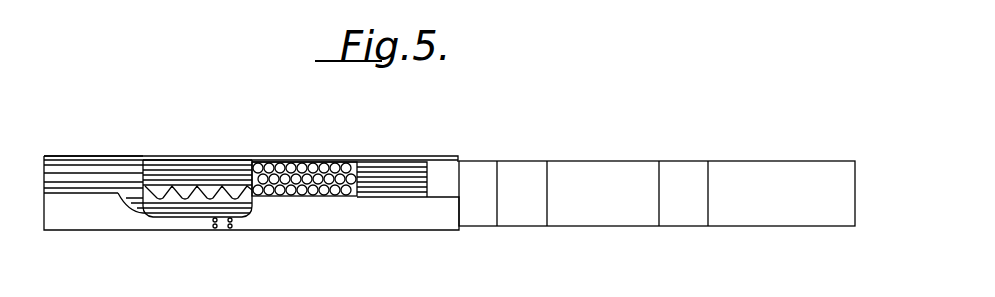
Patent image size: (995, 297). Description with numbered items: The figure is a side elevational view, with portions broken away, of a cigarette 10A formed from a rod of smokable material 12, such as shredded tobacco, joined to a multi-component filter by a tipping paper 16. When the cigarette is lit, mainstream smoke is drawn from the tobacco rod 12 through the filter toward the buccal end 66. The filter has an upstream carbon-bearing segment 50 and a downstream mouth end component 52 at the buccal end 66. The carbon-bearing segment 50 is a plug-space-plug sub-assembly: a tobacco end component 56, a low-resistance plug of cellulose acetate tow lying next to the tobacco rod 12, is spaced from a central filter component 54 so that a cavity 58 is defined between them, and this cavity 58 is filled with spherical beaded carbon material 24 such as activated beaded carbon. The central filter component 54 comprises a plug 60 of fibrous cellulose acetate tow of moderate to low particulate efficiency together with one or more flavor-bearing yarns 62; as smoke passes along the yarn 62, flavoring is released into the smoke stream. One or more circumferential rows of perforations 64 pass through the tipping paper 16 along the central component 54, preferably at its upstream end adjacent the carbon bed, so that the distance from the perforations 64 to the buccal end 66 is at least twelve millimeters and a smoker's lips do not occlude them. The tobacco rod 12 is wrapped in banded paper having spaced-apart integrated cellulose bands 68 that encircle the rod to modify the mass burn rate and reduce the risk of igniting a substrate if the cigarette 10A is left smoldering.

The cigarette 10A is at (648, 158).
The rod of smokable material 12 is at (768, 177).
The tipping paper 16 is at (338, 220).
The spherical beaded carbon material 24 is at (290, 163).
The carbon-bearing segment 50 is at (357, 157).
The mouth end component 52 is at (66, 222).
The central filter component 54 is at (208, 157).
The tobacco end component 56 is at (400, 187).
The cavity 58 is at (330, 163).
The plug of fibrous filter material 60 is at (216, 228).
The flavor-bearing yarn 62 is at (172, 192).
The perforations 64 is at (230, 228).
The buccal end 66 is at (36, 170).
The cellulose bands 68 is at (673, 210).